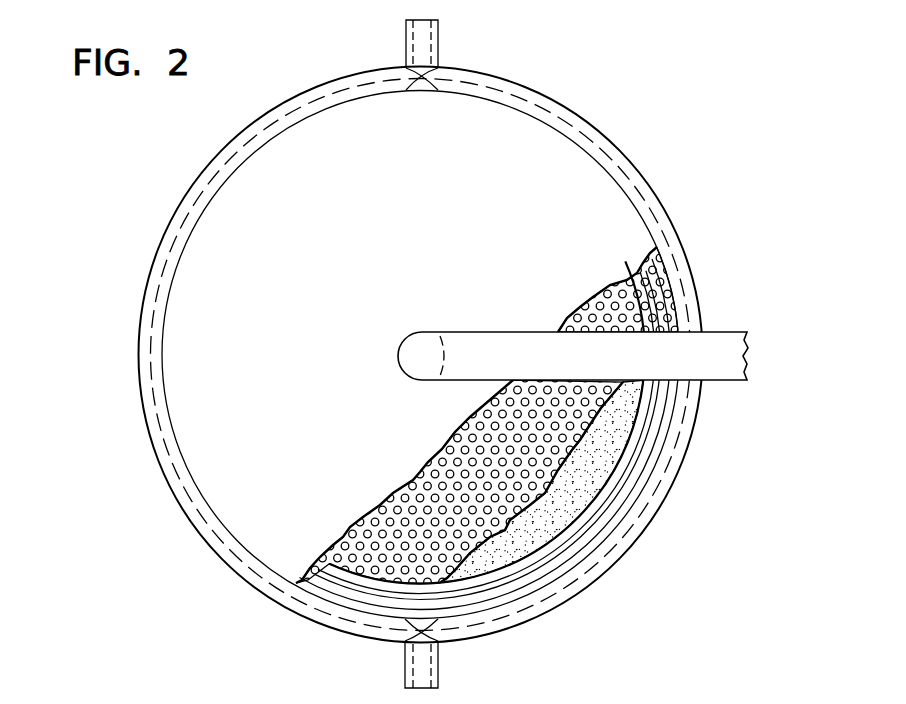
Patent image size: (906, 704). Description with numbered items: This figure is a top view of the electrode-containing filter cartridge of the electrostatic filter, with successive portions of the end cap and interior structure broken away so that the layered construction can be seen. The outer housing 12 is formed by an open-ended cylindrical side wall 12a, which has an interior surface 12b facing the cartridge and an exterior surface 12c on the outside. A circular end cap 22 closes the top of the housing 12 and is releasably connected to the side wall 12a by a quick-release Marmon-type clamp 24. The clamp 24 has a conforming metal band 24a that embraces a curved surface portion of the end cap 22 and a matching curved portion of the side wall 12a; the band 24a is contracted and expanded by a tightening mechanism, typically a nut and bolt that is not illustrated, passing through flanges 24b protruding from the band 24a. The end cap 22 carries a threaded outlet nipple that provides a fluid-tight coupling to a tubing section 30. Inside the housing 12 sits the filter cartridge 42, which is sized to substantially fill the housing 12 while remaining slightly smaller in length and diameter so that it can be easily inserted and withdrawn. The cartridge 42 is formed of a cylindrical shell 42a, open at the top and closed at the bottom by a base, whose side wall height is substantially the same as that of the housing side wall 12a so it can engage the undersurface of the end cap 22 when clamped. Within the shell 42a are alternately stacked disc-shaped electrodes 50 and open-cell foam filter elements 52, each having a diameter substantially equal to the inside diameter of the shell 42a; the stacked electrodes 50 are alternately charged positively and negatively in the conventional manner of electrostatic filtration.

The housing 12 is at (138, 334).
The cylindrical side wall 12a is at (660, 285).
The interior surface 12b is at (670, 307).
The exterior surface 12c is at (672, 466).
The end cap 22 is at (570, 157).
The clamp 24 is at (306, 95).
The metal band 24a is at (200, 185).
The flanges 24b is at (400, 32).
The tubing section 30 is at (728, 383).
The filter cartridge 42 is at (588, 530).
The cylindrical shell 42a is at (613, 488).
The disc-shaped electrodes 50 is at (375, 555).
The open-cell foam filter elements 52 is at (505, 560).